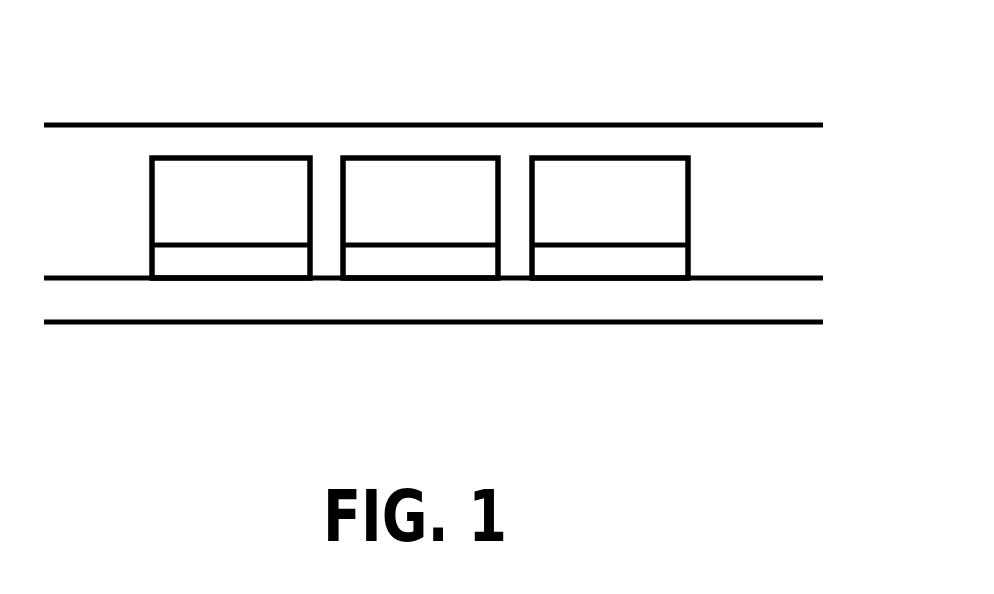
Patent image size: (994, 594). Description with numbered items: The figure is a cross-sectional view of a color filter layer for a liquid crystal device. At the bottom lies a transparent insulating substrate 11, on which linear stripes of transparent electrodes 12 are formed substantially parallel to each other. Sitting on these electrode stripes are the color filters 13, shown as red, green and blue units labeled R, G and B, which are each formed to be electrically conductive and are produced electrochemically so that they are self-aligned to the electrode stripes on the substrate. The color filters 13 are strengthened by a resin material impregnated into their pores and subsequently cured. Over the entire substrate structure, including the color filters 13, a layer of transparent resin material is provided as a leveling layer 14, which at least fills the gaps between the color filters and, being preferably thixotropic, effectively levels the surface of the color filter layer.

The transparent insulating substrate 11 is at (643, 304).
The transparent electrodes 12 is at (665, 260).
The color filters 13 is at (672, 202).
The leveling layer 14 is at (523, 143).